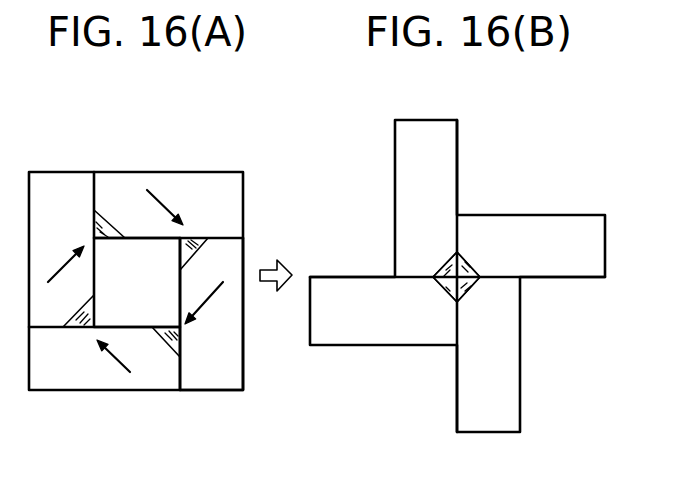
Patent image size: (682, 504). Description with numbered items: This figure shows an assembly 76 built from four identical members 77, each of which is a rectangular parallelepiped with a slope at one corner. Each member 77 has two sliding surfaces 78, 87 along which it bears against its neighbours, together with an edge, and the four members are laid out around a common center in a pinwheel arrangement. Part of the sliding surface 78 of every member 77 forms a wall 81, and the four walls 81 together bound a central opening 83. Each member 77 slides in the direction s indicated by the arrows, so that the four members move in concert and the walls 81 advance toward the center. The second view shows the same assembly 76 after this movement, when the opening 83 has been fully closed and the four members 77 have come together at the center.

The assembly 76 is at (178, 162).
The rectangular parallelepiped member 77 is at (223, 202).
The sliding surface 78 is at (95, 272).
The wall 81 is at (176, 308).
The opening 83 is at (140, 320).
The sliding surface 87 is at (181, 376).